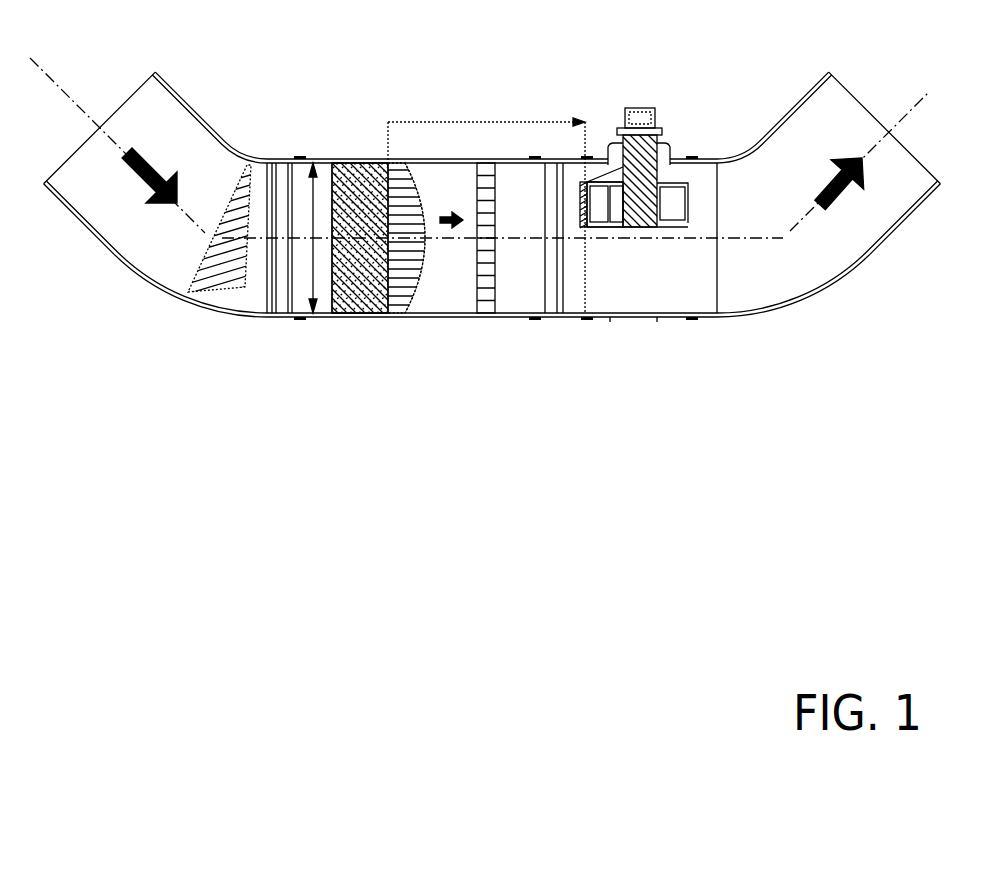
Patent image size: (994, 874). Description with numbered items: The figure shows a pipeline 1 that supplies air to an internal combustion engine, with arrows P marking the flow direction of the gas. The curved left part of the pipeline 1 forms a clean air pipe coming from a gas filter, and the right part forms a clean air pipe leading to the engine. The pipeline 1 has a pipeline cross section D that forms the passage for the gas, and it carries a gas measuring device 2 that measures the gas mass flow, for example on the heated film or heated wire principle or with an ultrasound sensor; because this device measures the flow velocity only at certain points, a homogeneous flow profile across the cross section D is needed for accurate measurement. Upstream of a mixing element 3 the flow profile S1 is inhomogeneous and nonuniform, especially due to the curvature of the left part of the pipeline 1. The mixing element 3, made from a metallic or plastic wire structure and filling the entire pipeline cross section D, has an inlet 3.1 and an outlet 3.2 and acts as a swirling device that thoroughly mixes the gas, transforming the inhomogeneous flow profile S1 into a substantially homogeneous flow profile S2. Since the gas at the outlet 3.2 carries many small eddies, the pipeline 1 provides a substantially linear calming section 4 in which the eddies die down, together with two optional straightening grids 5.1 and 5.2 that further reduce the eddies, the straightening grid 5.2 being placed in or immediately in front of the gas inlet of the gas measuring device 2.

The pipeline 1 is at (165, 125).
The gas measuring device 2 is at (637, 203).
The mixing element 3 is at (336, 168).
The inlet 3.1 is at (333, 316).
The outlet 3.2 is at (393, 290).
The calming section 4 is at (486, 202).
The straightening grid 5.1 is at (485, 278).
The straightening grid 5.2 is at (598, 226).
The pipeline cross section D is at (313, 213).
The flow profile upstream from the mixing element S1 is at (230, 293).
The homogeneous flow profile S2 is at (417, 297).
The flow direction P is at (501, 188).